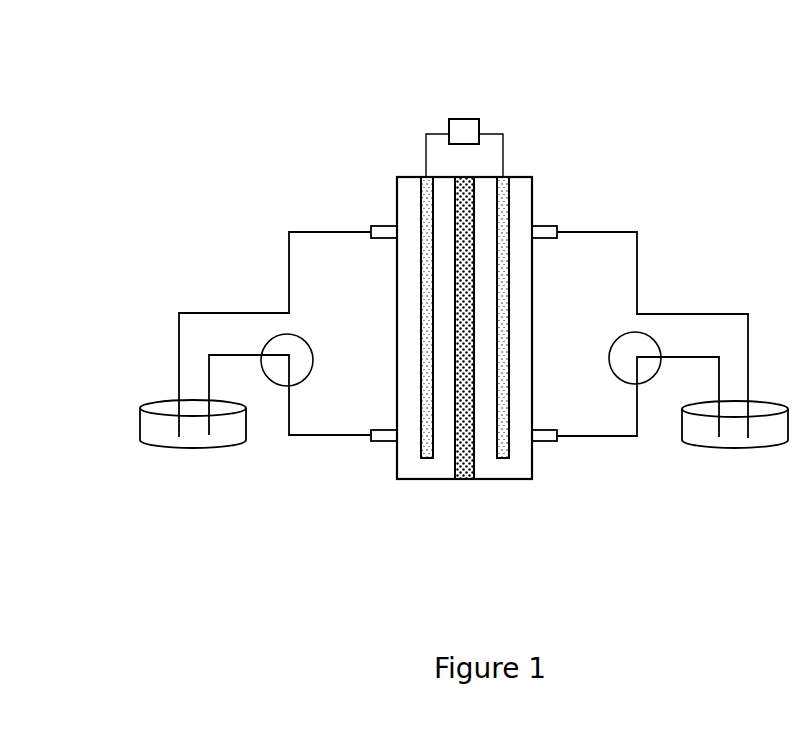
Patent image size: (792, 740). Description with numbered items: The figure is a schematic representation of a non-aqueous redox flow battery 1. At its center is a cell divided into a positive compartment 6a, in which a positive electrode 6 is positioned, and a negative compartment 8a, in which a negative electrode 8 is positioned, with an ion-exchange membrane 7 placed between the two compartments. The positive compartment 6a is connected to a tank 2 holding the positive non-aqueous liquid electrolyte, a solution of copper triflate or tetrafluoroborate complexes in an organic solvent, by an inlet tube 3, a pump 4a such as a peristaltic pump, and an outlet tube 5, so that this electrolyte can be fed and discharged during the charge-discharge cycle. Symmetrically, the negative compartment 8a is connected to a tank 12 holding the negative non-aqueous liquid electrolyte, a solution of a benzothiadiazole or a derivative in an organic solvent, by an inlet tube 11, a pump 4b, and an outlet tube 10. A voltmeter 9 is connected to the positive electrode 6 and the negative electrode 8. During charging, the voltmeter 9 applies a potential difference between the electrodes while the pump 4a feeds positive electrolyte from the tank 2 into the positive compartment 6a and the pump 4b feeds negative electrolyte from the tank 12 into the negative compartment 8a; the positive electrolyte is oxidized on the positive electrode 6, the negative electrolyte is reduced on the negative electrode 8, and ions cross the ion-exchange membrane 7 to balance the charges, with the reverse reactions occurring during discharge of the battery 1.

The non-aqueous redox flow battery 1 is at (168, 197).
The tank 2 is at (193, 470).
The inlet tube 3 is at (290, 446).
The pump 4a is at (306, 340).
The pump 4b is at (627, 331).
The outlet tube 5 is at (275, 280).
The positive electrode 6 is at (410, 376).
The positive compartment 6a is at (384, 366).
The ion-exchange membrane 7 is at (461, 377).
The negative electrode 8 is at (512, 368).
The negative compartment 8a is at (531, 369).
The voltmeter 9 is at (474, 104).
The outlet tube 10 is at (652, 282).
The inlet tube 11 is at (638, 443).
The tank 12 is at (735, 467).